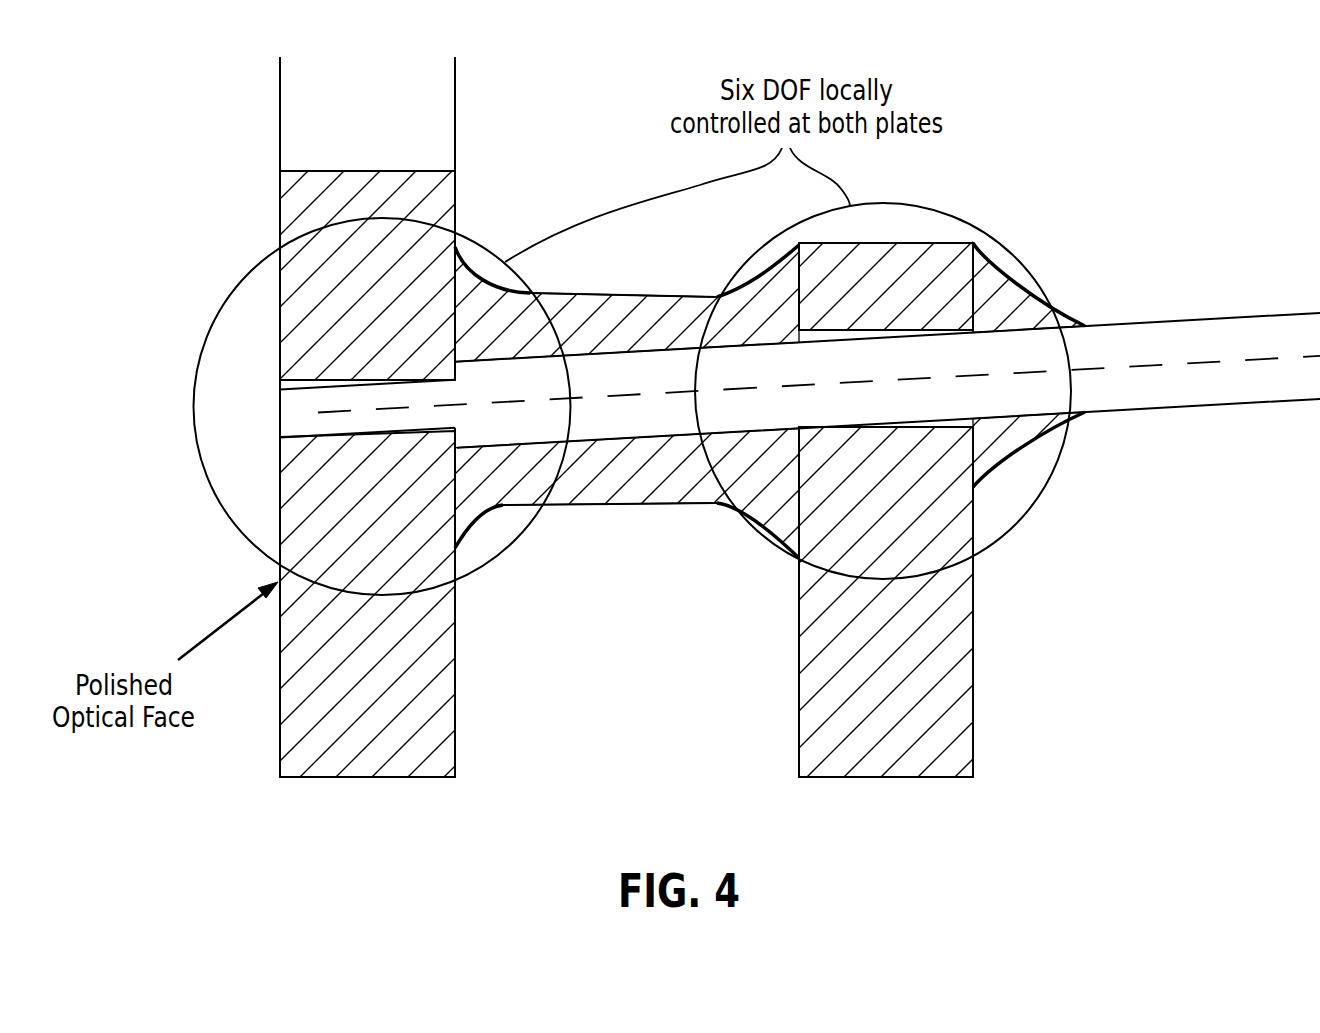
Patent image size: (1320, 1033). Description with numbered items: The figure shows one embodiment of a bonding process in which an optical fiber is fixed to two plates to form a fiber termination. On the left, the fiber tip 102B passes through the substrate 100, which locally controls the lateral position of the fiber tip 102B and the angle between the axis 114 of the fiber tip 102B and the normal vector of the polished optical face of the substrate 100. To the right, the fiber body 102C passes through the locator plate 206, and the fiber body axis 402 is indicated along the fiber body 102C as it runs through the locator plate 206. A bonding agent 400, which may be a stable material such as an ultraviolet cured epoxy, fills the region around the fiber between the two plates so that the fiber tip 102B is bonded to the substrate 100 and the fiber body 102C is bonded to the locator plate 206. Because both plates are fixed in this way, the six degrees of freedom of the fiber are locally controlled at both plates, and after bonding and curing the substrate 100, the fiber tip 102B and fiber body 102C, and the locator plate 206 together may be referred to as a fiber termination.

The substrate 100 is at (382, 188).
The axis of the fiber tip 114 is at (312, 413).
The fiber tip 102B is at (282, 428).
The fiber body 102C is at (1127, 342).
The bonding agent 400 is at (482, 497).
The fiber body axis 402 is at (1009, 370).
The locator plate 206 is at (905, 491).